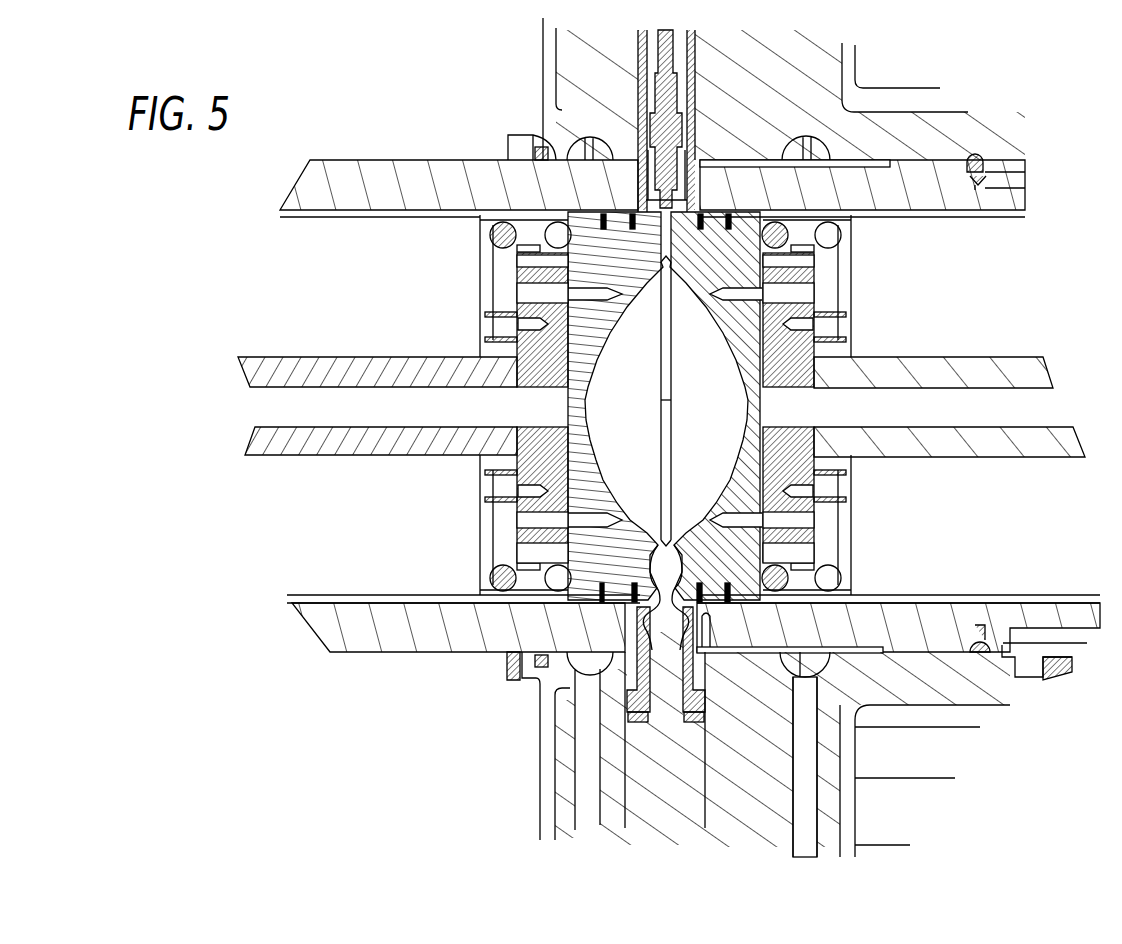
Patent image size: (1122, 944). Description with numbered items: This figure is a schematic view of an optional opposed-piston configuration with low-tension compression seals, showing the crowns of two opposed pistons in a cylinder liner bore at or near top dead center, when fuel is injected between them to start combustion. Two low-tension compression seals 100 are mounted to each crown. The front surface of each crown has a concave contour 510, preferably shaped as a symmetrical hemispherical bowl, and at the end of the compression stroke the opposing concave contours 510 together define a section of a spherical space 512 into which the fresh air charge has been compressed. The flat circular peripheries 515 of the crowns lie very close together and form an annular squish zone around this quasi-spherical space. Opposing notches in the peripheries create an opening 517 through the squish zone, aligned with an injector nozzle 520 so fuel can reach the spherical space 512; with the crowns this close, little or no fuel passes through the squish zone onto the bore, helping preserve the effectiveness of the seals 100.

The low-tension compression seal 100 is at (633, 230).
The concave contour 510 is at (593, 360).
The spherical space 512 is at (708, 458).
The flat circular periphery 515 is at (663, 258).
The opening 517 is at (648, 550).
The injector nozzle 520 is at (667, 630).